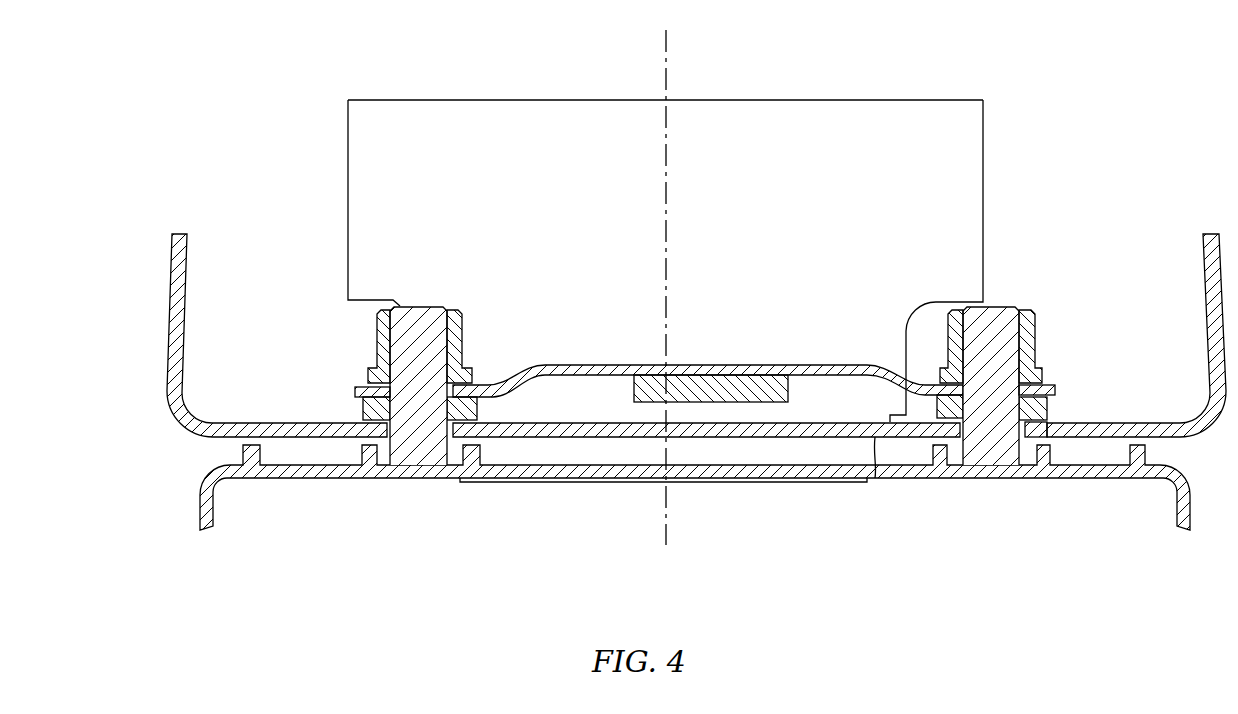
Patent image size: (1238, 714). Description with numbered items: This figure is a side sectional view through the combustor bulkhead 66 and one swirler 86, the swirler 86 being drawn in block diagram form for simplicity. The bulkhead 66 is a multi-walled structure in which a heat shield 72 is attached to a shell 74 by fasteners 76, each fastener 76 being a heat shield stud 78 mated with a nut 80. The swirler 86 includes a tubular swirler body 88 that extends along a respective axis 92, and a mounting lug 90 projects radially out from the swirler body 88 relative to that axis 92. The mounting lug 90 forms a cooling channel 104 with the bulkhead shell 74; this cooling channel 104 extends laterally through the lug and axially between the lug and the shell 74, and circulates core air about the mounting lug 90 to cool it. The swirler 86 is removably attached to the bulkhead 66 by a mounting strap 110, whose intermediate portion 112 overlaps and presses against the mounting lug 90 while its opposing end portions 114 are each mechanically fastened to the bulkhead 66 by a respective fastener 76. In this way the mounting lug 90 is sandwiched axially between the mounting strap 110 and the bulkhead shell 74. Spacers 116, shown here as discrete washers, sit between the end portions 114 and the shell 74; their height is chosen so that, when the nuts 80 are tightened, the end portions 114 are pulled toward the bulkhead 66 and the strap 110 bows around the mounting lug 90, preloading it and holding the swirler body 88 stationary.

The combustor bulkhead 66 is at (634, 499).
The heat shield 72 is at (295, 478).
The shell 74 is at (167, 368).
The fastener 76 is at (707, 332).
The heat shield stud 78 is at (415, 322).
The nut 80 is at (375, 345).
The swirler 86 is at (880, 100).
The swirler body 88 is at (985, 130).
The mounting lug 90 is at (790, 392).
The axis 92 is at (666, 50).
The cooling channel 104 is at (757, 415).
The mounting strap 110 is at (585, 364).
The intermediate portion 112 is at (722, 374).
The end portion 114 is at (355, 392).
The spacer 116 is at (495, 395).